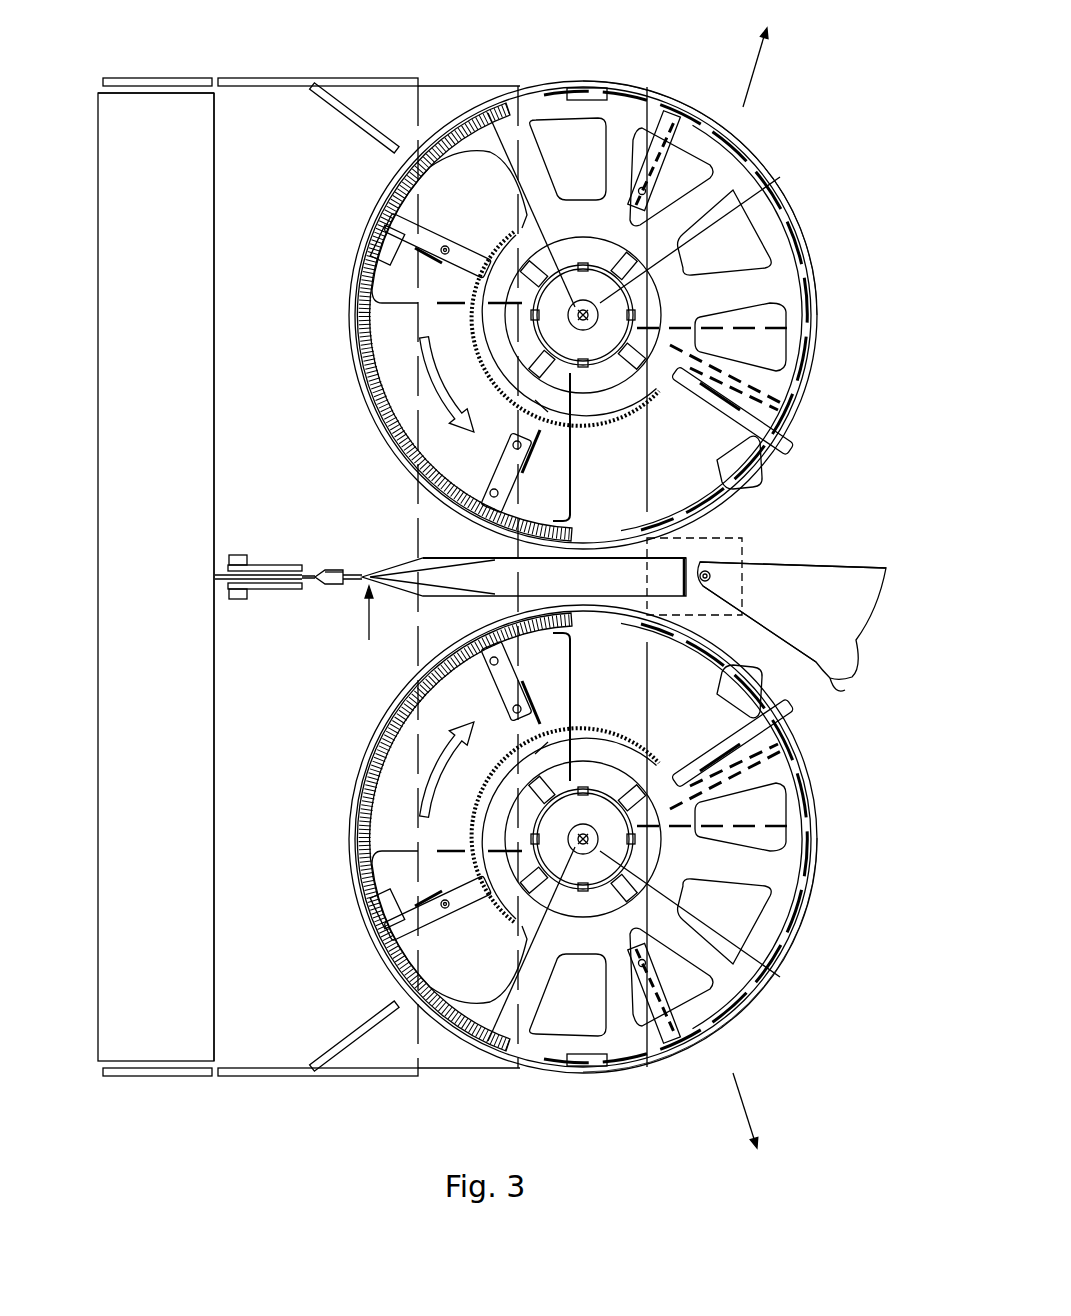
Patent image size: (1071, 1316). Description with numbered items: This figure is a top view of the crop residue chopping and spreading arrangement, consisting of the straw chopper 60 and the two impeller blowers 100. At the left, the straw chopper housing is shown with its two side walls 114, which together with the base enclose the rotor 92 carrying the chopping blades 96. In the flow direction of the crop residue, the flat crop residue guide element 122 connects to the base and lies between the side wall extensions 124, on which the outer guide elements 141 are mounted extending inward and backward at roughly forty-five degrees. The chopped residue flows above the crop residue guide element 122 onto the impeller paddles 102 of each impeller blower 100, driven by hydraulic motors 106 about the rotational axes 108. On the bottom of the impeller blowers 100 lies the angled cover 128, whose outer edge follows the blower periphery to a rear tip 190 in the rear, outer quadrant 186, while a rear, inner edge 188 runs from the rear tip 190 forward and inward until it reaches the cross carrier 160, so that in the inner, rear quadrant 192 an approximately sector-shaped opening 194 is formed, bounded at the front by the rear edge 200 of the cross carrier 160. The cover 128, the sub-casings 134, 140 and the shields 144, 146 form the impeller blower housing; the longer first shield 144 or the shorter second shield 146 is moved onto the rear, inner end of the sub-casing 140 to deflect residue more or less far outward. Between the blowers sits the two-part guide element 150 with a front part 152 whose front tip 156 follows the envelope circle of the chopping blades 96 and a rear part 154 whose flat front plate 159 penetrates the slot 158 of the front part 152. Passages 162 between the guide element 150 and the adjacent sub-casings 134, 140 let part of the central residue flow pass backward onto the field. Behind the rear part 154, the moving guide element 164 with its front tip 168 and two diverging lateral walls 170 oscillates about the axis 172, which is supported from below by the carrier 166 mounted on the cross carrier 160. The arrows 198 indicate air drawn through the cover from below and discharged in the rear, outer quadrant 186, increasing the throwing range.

The straw chopper 60 is at (232, 702).
The rotor 92 is at (220, 430).
The chopping blades 96 is at (287, 563).
The impeller blowers 100 is at (822, 220).
The impeller paddles 102 is at (527, 697).
The hydraulic motors 106 is at (735, 152).
The rotational axes 108 is at (613, 290).
The side walls 114 is at (148, 78).
The crop residue guide element 122 is at (245, 263).
The side wall extensions 124 is at (260, 78).
The cover 128 is at (436, 108).
The sub-casing 134 is at (365, 325).
The sub-casing 140 is at (738, 503).
The outer guide elements 141 is at (377, 138).
The first shield 144 is at (520, 94).
The second shield 146 is at (782, 437).
The two-part guide element 150 is at (366, 639).
The front part 152 is at (328, 570).
The rear part 154 is at (447, 558).
The front tip 156 is at (298, 585).
The slot 158 is at (325, 587).
The front plate 159 is at (350, 577).
The cross carrier 160 is at (580, 1050).
The passages 162 is at (590, 553).
The moving guide element 164 is at (830, 590).
The carrier 166 is at (722, 607).
The front tip 168 is at (738, 540).
The lateral walls 170 is at (793, 565).
The axis 172 is at (712, 580).
The rear, outer quadrant 186 is at (705, 249).
The rear, inner edge 188 is at (806, 306).
The rear tip 190 is at (812, 250).
The inner, rear quadrant 192 is at (657, 466).
The opening 194 is at (652, 498).
The arrows 198 is at (752, 80).
The rear edge 200 is at (637, 424).